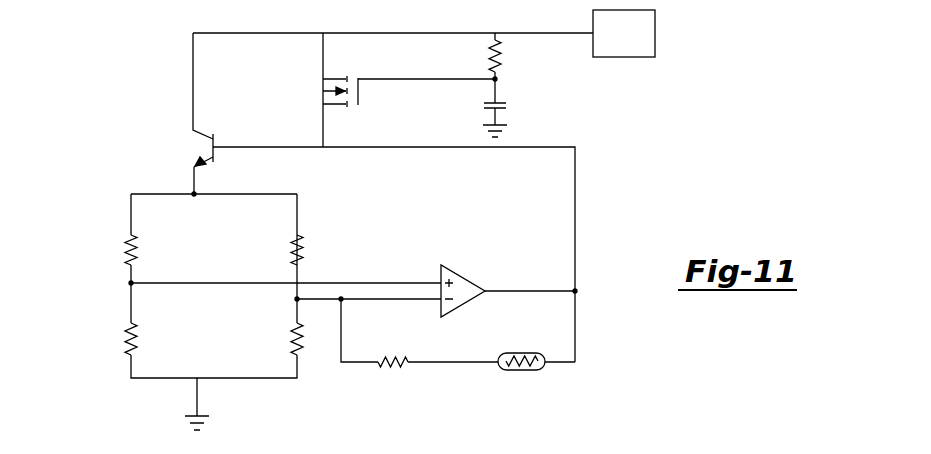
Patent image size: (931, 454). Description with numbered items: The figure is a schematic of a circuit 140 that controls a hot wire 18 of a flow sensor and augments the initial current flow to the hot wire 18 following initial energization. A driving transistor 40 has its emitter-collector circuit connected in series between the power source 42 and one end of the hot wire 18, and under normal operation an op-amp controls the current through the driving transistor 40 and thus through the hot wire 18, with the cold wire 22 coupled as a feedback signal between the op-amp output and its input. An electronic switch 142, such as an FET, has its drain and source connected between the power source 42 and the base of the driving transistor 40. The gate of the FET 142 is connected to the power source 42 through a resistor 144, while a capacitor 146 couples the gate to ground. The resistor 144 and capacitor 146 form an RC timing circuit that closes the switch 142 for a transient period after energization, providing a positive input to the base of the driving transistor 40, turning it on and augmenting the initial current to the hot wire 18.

The circuit 140 is at (130, 138).
The driving transistor 40 is at (196, 113).
The electronic switch 142 is at (328, 88).
The resistor 144 is at (500, 47).
The capacitor 146 is at (500, 108).
The power source 42 is at (637, 42).
The hot wire 18 is at (129, 250).
The cold wire 22 is at (524, 372).